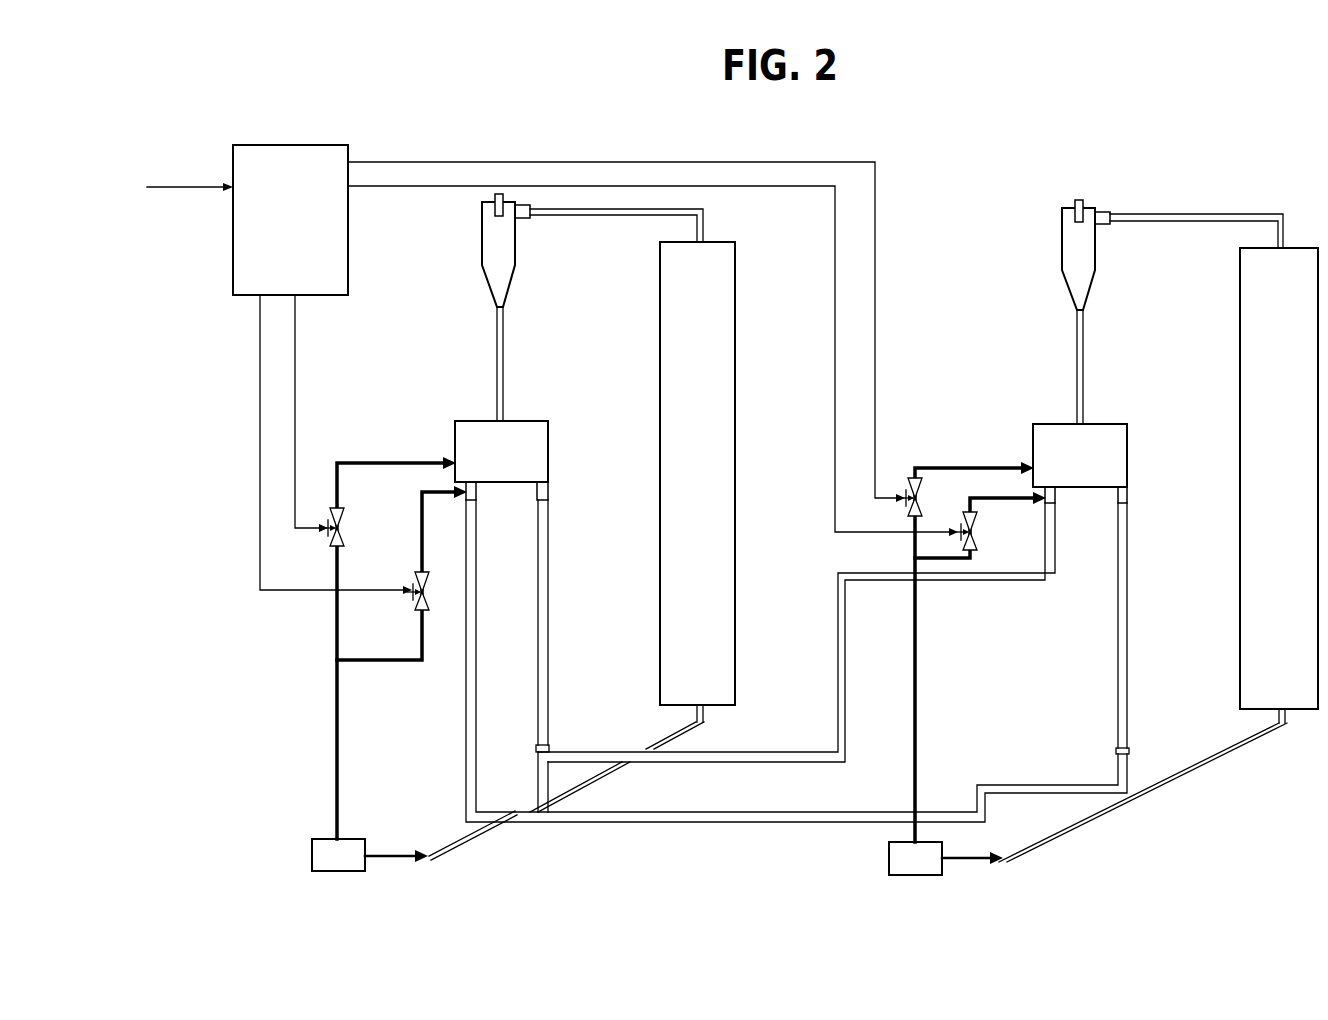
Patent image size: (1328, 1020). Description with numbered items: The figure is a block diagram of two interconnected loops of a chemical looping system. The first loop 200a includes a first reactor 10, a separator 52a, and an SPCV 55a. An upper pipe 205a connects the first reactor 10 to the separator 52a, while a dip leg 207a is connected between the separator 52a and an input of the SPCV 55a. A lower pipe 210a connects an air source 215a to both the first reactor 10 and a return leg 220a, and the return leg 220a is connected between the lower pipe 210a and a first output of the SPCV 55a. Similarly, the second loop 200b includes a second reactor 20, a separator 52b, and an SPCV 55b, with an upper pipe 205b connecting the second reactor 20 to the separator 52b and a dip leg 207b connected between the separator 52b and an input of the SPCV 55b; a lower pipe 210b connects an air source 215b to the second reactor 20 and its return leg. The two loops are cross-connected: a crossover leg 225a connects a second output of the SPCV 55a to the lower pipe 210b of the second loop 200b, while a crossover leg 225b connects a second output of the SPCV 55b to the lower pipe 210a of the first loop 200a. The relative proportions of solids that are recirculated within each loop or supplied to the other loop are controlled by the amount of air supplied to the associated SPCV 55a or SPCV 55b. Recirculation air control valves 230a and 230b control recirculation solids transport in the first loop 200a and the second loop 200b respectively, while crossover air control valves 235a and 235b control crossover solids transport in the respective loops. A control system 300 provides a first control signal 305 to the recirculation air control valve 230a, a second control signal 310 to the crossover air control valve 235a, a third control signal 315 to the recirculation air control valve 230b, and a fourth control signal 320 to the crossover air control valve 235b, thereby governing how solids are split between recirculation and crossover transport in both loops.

The control system 300 is at (247, 220).
The first control signal 305 is at (298, 382).
The second control signal 310 is at (292, 593).
The third control signal 315 is at (875, 252).
The fourth control signal 320 is at (833, 224).
The recirculation air control valve 230a is at (341, 521).
The crossover air control valve 235a is at (427, 578).
The recirculation air control valve 230b is at (967, 652).
The crossover air control valve 235b is at (980, 525).
The air source 215a is at (370, 855).
The air source 215b is at (946, 858).
The separator 52a is at (506, 250).
The separator 52b is at (1086, 255).
The upper pipe 205a is at (582, 217).
The upper pipe 205b is at (1200, 222).
The dip leg 207a is at (507, 385).
The dip leg 207b is at (1085, 368).
The first loop 200a is at (598, 409).
The second loop 200b is at (1182, 429).
The first reactor 10 is at (697, 482).
The second reactor 20 is at (1279, 485).
The SPCV 55a is at (501, 460).
The SPCV 55b is at (1080, 463).
The return leg 220a is at (550, 602).
The crossover leg 225a is at (478, 660).
The crossover leg 225b is at (700, 765).
The lower pipe 210a is at (703, 722).
The lower pipe 210b is at (1195, 778).